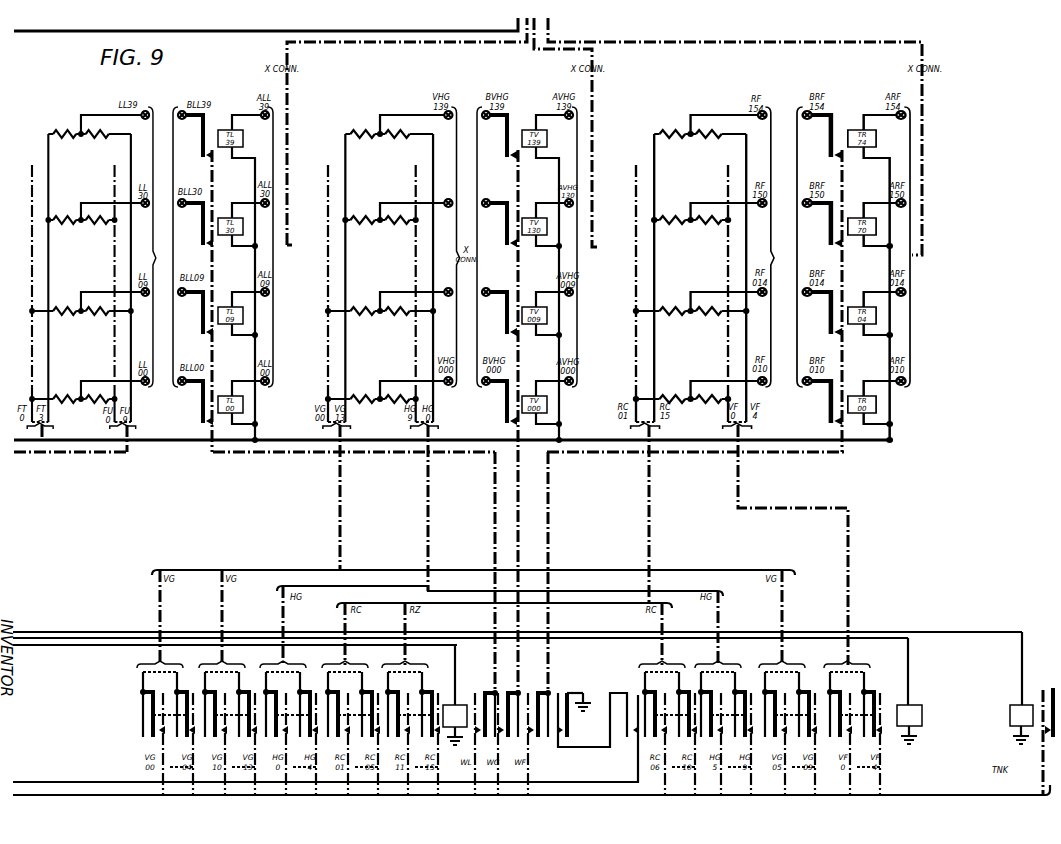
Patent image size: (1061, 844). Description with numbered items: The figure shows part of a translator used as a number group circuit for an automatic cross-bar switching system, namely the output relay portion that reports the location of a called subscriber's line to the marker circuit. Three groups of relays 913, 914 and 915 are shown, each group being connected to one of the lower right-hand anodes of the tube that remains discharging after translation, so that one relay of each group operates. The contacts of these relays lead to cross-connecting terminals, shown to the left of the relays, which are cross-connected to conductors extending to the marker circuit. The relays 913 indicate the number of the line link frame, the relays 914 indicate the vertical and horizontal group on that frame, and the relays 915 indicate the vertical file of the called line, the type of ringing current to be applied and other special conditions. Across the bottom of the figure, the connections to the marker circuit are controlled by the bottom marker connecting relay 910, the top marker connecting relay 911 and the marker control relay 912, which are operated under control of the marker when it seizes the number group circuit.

The MCB BOT relay 910 is at (455, 705).
The MCB TOP relay 911 is at (910, 705).
The MCC relay 912 is at (1010, 712).
The group of relays 913 is at (218, 94).
The group of relays 914 is at (520, 95).
The group of relays 915 is at (850, 100).